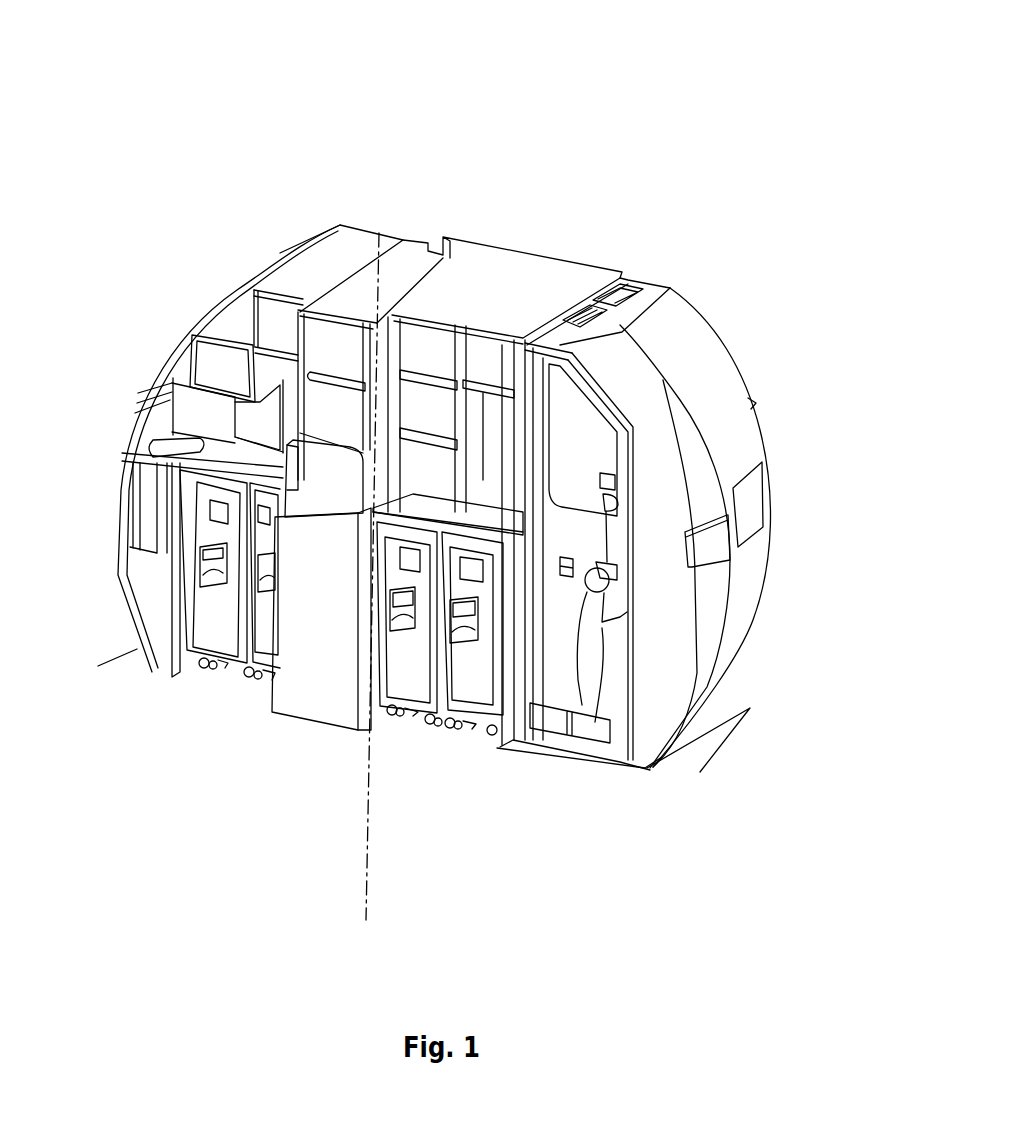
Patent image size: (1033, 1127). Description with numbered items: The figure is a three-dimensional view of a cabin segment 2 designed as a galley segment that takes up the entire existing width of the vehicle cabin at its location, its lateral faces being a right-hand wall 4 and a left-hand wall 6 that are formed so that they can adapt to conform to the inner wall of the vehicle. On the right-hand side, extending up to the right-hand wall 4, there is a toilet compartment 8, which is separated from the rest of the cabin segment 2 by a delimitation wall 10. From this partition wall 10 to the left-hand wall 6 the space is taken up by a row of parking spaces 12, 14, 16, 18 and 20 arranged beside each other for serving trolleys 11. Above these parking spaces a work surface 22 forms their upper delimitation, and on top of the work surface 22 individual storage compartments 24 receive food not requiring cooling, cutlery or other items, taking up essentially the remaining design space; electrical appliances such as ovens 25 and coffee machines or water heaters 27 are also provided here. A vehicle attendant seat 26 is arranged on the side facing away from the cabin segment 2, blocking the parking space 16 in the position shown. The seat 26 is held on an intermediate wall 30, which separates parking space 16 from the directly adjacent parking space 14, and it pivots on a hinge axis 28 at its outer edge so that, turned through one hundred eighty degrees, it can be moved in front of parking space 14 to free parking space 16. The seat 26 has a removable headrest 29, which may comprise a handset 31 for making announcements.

The cabin segment 2 is at (530, 132).
The right-hand wall 4 is at (742, 462).
The left-hand wall 6 is at (144, 369).
The toilet compartment 8 is at (585, 700).
The delimitation wall 10 is at (523, 338).
The serving trolley 11 is at (204, 624).
The parking space 12 is at (465, 740).
The parking space 14 is at (408, 725).
The parking space 16 is at (340, 743).
The parking space 18 is at (258, 694).
The parking space 20 is at (210, 686).
The work surface 22 is at (487, 514).
The storage compartment 24 is at (213, 352).
The oven 25 is at (428, 480).
The vehicle attendant seat 26 is at (297, 618).
The water heater 27 is at (200, 413).
The hinge axis 28 is at (366, 833).
The headrest 29 is at (310, 457).
The intermediate wall 30 is at (387, 531).
The handset 31 is at (293, 468).